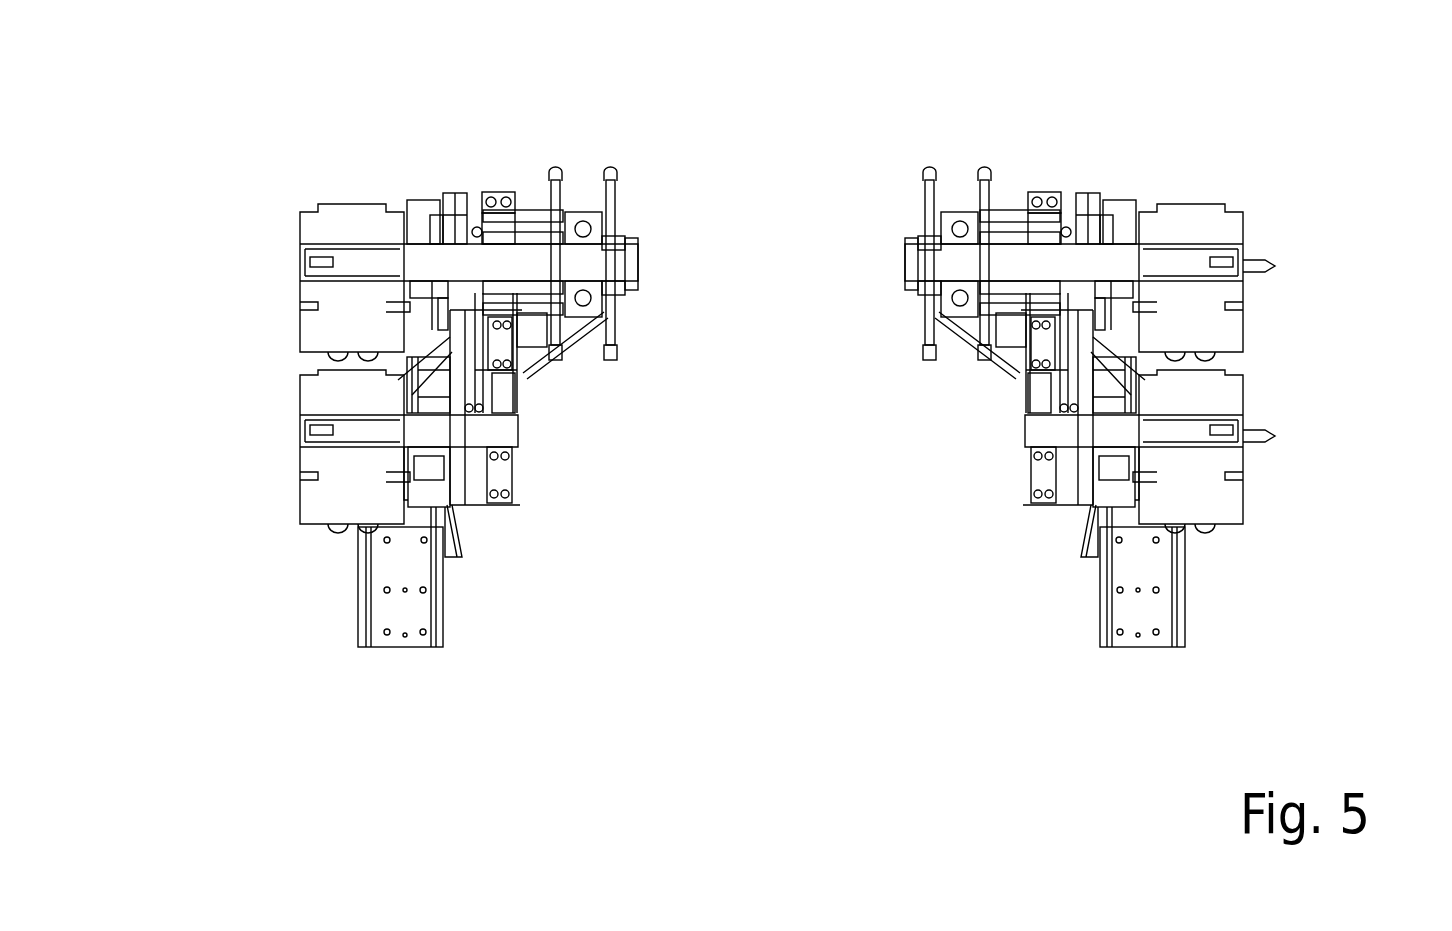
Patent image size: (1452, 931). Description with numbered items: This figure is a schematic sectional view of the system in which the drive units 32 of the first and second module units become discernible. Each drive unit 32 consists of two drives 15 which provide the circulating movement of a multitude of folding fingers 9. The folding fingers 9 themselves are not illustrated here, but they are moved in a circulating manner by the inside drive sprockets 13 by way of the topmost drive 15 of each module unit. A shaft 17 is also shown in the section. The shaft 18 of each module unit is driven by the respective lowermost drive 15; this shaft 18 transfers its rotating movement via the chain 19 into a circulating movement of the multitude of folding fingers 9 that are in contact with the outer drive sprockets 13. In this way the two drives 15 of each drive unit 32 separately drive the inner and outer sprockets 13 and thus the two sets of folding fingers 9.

The folding finger 9 is at (930, 168).
The drive sprocket 13 is at (557, 168).
The drive 15 is at (347, 225).
The shaft 17 is at (427, 263).
The shaft 18 is at (503, 435).
The chain 19 is at (498, 498).
The drive unit 32 is at (200, 418).